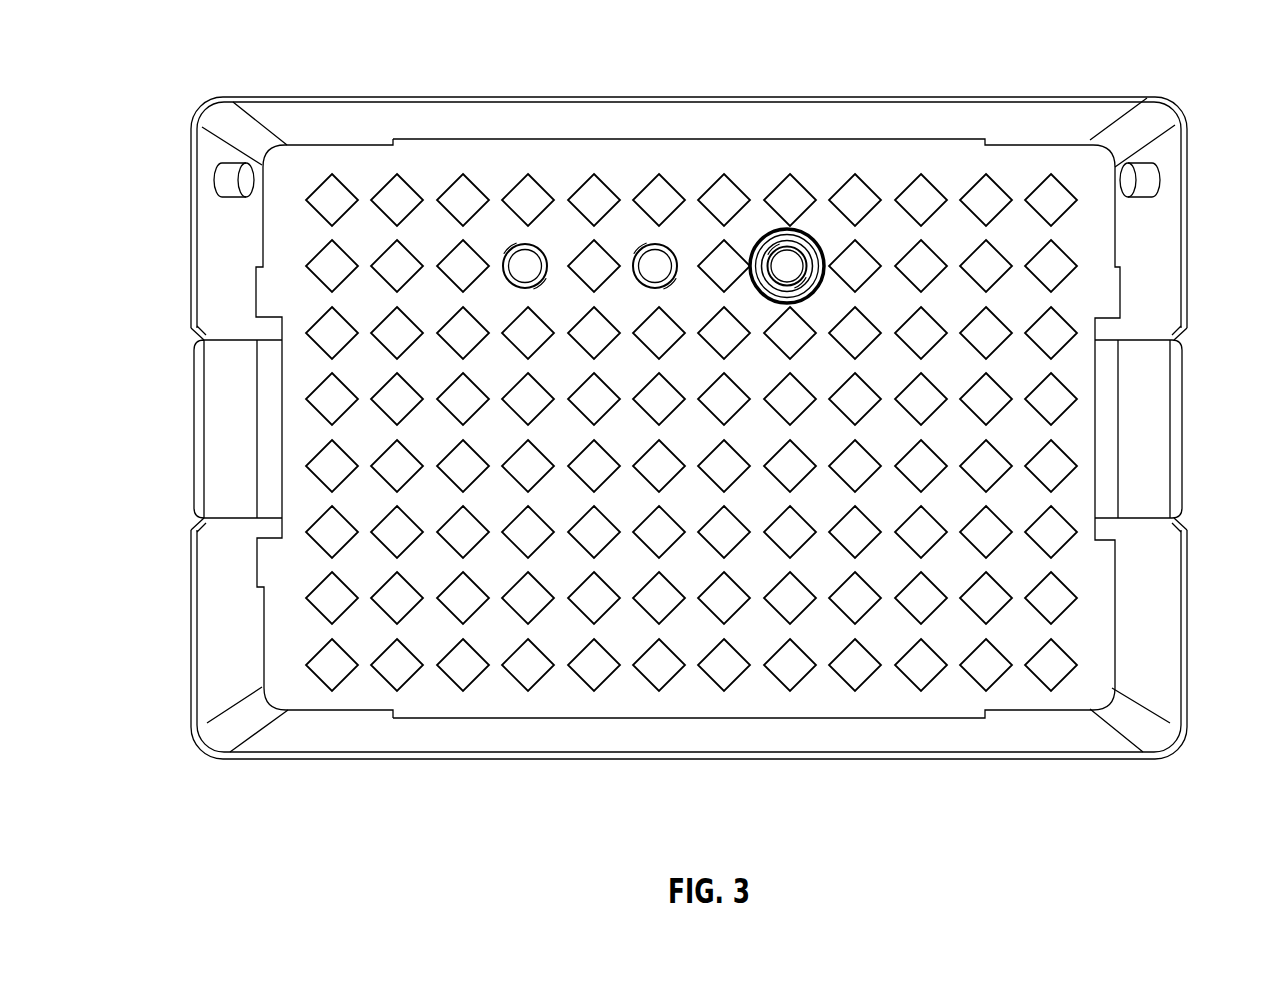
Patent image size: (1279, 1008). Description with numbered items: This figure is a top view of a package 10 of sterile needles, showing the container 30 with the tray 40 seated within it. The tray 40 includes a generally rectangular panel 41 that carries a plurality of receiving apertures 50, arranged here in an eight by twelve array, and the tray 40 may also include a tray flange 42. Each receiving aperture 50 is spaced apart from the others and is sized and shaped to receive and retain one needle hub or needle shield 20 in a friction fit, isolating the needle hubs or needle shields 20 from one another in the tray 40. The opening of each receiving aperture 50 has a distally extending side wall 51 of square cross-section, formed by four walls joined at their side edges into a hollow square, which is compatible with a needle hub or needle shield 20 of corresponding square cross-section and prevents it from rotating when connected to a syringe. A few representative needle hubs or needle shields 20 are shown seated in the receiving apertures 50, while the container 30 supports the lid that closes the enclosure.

The package 10 is at (175, 95).
The needle hub or needle shield 20 is at (525, 255).
The container 30 is at (210, 622).
The tray 40 is at (262, 295).
The panel 41 is at (1115, 228).
The tray flange 42 is at (1133, 398).
The receiving aperture 50 is at (928, 663).
The distally extending side wall 51 is at (399, 691).